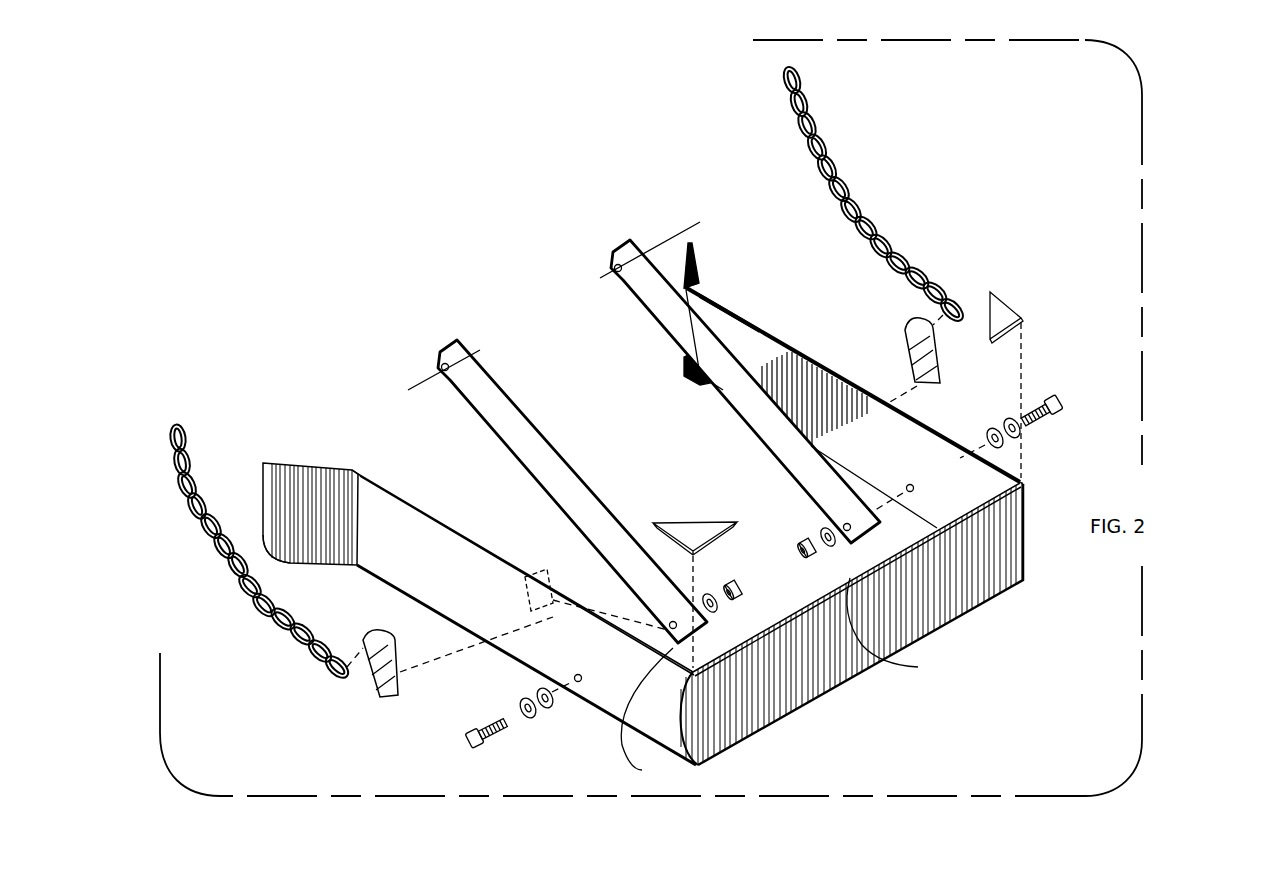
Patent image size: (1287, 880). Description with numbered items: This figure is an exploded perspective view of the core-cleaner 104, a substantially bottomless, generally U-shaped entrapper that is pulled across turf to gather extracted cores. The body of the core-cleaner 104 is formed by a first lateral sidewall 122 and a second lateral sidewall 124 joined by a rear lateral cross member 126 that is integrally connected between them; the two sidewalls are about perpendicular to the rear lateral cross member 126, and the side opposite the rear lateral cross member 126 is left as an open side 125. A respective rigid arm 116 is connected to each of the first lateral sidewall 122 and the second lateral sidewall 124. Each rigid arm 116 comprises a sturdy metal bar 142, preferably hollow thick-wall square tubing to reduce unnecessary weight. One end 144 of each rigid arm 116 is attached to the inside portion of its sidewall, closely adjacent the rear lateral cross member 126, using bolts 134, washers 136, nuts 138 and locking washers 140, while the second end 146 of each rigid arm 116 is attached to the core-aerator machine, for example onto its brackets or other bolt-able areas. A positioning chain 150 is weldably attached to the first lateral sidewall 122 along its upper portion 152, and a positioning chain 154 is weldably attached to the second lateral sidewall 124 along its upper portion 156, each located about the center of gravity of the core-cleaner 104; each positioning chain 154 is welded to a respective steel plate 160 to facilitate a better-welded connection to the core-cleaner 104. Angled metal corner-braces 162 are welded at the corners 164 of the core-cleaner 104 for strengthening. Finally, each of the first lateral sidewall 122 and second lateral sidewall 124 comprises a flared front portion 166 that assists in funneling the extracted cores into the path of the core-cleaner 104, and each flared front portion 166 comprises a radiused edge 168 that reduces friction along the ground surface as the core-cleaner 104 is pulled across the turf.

The core-cleaner 104 is at (933, 720).
The rigid arm 116 is at (640, 326).
The first lateral sidewall 122 is at (387, 510).
The second lateral sidewall 124 is at (745, 318).
The open side 125 is at (595, 353).
The rear lateral cross member 126 is at (985, 598).
The bolts 134 is at (485, 748).
The washers 136 is at (540, 715).
The nuts 138 is at (810, 555).
The locking washers 140 is at (822, 530).
The sturdy metal bar 142 is at (738, 410).
The one end 144 is at (788, 679).
The second end 146 is at (445, 342).
The positioning chain 150 is at (208, 532).
The upper portion 152 is at (530, 574).
The positioning chain 154 is at (868, 222).
The upper portion 156 is at (770, 338).
The steel plate 160 is at (383, 700).
The corner-braces 162 is at (700, 520).
The corners 164 is at (1037, 480).
The flared front portion 166 is at (262, 464).
The radiused edge 168 is at (280, 558).